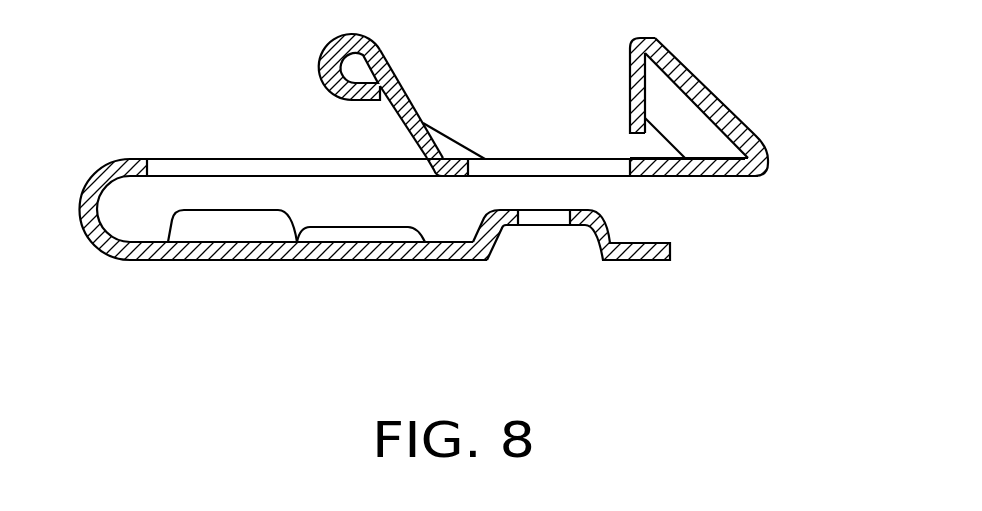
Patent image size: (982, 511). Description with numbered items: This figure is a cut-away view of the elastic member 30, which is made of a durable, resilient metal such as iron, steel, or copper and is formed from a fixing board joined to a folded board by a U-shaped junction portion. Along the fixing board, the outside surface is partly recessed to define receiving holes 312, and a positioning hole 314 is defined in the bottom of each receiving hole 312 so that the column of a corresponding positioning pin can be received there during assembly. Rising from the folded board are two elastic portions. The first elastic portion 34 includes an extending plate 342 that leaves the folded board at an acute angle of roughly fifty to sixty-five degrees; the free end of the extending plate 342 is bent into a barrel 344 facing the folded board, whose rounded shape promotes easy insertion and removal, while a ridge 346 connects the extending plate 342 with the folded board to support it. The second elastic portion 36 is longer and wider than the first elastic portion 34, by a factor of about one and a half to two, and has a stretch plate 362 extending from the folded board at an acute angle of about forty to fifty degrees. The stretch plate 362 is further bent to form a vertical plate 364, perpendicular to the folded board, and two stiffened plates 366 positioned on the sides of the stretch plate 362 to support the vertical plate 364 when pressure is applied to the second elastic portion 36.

The elastic member 30 is at (208, 88).
The receiving hole 312 is at (582, 247).
The positioning hole 314 is at (540, 218).
The first elastic portion 34 is at (492, 28).
The extending plate 342 is at (400, 92).
The barrel 344 is at (332, 70).
The ridge 346 is at (438, 137).
The second elastic portion 36 is at (803, 50).
The stretch plate 362 is at (718, 103).
The vertical plate 364 is at (640, 80).
The stiffened plate 366 is at (700, 123).